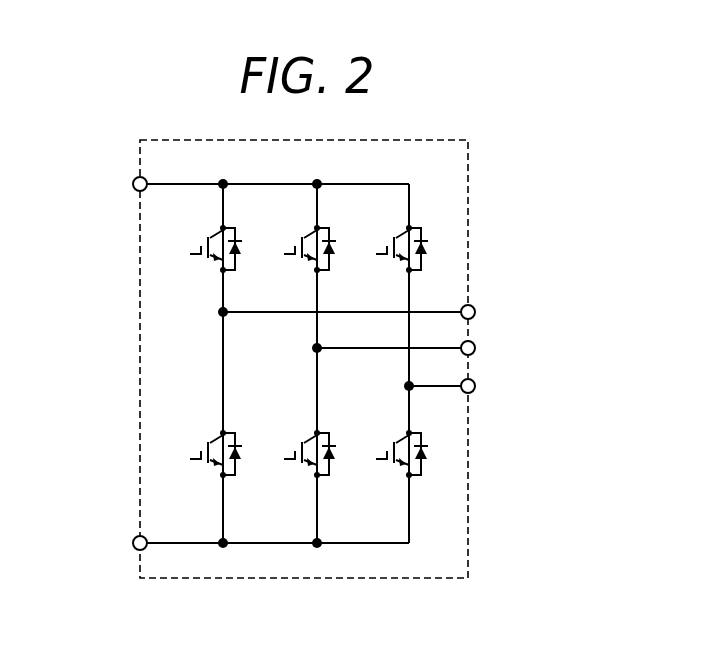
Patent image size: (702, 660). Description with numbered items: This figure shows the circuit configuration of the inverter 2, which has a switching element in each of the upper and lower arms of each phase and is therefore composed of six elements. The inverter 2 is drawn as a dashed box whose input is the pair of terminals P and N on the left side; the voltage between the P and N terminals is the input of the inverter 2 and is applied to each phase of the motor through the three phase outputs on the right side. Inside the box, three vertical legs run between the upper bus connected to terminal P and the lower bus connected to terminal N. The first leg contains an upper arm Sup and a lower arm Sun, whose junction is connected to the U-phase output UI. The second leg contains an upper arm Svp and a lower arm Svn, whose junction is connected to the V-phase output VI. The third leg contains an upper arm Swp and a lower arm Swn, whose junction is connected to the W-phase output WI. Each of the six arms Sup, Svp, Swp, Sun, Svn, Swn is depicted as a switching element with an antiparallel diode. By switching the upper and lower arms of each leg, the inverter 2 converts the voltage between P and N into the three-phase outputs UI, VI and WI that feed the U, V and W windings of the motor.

The inverter 2 is at (288, 389).
The positive input terminal P is at (124, 186).
The negative input terminal N is at (124, 545).
The U-phase output UI is at (455, 305).
The V-phase output VI is at (454, 341).
The W-phase output WI is at (455, 379).
The upper arm Sup is at (208, 239).
The upper arm Svp is at (302, 239).
The upper arm Swp is at (392, 239).
The lower arm Sun is at (203, 450).
The lower arm Svn is at (298, 450).
The lower arm Swn is at (389, 450).